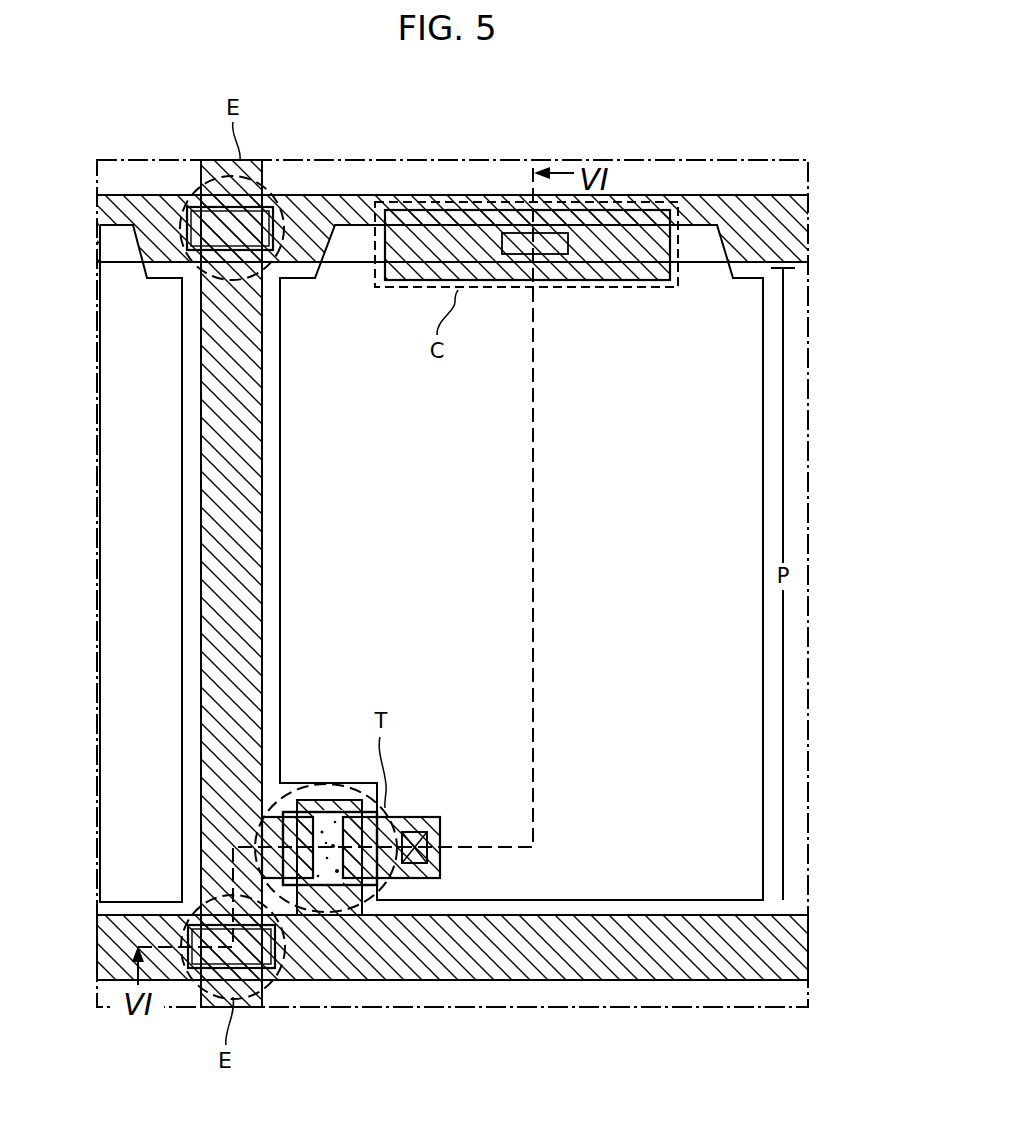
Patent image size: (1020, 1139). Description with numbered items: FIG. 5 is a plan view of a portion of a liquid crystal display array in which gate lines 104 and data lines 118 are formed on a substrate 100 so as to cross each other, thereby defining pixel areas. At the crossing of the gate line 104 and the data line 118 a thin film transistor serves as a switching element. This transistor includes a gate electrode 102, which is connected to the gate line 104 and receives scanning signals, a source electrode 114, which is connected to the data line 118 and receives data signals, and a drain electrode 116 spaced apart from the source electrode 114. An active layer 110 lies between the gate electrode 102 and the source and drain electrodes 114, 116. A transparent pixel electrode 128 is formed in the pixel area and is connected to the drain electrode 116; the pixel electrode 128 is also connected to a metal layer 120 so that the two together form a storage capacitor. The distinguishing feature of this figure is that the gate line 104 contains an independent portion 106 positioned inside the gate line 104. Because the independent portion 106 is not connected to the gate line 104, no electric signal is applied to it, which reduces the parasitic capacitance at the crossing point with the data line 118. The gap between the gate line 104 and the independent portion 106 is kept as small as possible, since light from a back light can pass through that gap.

The substrate 100 is at (810, 609).
The gate electrode 102 is at (360, 800).
The gate line 104 is at (628, 980).
The independent portion 106 is at (290, 980).
The active layer 110 is at (348, 887).
The source electrode 114 is at (312, 817).
The drain electrode 116 is at (427, 817).
The data line 118 is at (202, 555).
The metal layer 120 is at (583, 288).
The pixel electrode 128 is at (763, 688).